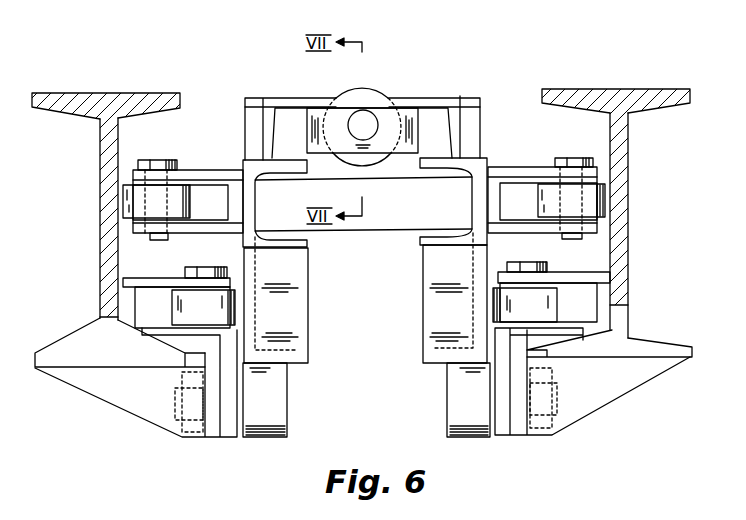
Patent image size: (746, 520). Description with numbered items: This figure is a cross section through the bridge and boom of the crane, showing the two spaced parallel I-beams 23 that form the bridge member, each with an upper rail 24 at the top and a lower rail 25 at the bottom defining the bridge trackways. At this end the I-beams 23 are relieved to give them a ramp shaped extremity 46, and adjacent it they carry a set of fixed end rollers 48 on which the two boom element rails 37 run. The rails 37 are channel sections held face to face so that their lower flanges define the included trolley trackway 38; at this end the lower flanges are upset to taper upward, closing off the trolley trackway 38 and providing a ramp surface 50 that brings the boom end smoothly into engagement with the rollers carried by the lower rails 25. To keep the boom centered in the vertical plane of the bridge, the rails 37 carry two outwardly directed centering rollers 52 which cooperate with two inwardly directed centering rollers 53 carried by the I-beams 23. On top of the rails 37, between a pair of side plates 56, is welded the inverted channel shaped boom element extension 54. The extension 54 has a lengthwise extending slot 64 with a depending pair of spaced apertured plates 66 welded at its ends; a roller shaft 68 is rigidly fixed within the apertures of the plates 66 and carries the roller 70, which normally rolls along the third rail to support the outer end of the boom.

The I-beam 23 is at (100, 220).
The upper rail 24 is at (152, 93).
The lower rail 25 is at (52, 353).
The boom element rail 37 is at (253, 202).
The trolley trackway 38 is at (297, 352).
The ramp shaped extremity 46 is at (102, 322).
The fixed end roller 48 is at (283, 393).
The ramp surface 50 is at (305, 267).
The outwardly directed centering roller 52 is at (193, 193).
The inwardly directed centering roller 53 is at (236, 290).
The boom element extension 54 is at (298, 100).
The side plate 56 is at (482, 118).
The lengthwise extending slot 64 is at (412, 100).
The apertured plate 66 is at (398, 160).
The roller shaft 68 is at (367, 124).
The roller 70 is at (357, 87).